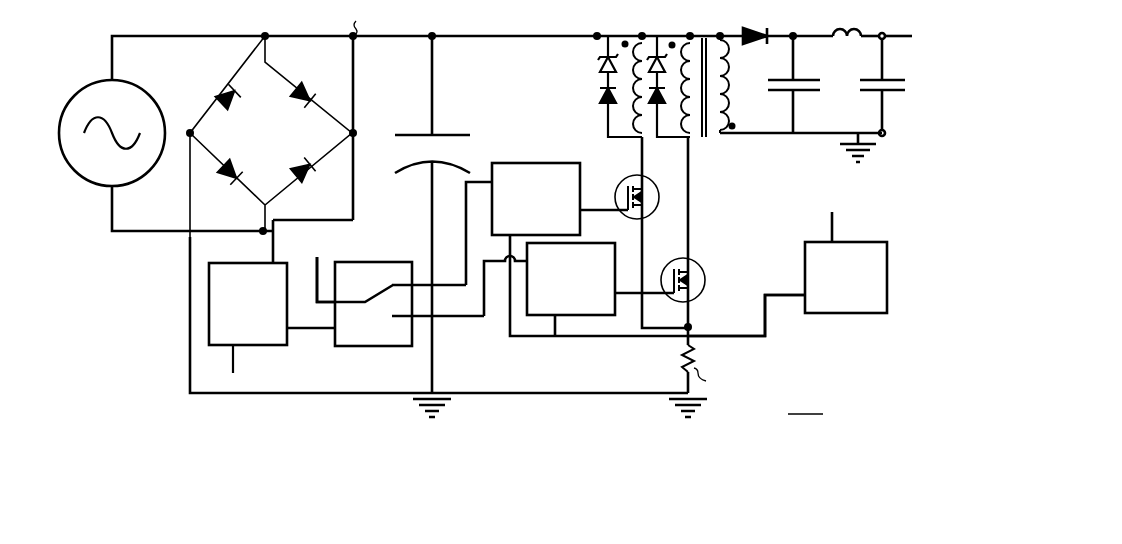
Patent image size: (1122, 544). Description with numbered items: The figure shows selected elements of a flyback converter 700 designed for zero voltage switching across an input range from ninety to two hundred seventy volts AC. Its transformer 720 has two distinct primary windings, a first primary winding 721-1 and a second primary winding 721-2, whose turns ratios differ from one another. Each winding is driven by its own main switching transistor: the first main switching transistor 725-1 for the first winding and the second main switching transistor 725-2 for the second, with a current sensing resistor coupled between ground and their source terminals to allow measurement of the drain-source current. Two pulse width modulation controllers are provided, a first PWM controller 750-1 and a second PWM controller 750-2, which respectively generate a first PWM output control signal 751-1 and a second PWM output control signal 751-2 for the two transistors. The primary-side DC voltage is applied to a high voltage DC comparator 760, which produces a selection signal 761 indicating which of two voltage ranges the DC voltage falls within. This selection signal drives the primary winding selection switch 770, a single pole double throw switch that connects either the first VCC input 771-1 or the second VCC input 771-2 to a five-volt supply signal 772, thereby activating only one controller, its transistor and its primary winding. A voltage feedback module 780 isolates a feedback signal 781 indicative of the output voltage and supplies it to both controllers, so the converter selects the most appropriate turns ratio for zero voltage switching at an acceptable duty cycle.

The flyback converter 700 is at (497, 271).
The transformer 720 is at (722, 145).
The first primary winding 721-1 is at (650, 26).
The second primary winding 721-2 is at (697, 26).
The first main switching transistor 725-1 is at (659, 199).
The second main switching transistor 725-2 is at (704, 265).
The PWM-1 controller 750-1 is at (576, 151).
The PWM-2 controller 750-2 is at (583, 316).
The first PWM output control signal 751-1 is at (587, 203).
The second PWM output control signal 751-2 is at (626, 288).
The high voltage DC comparator 760 is at (254, 346).
The selection signal 761 is at (313, 330).
The primary winding selection switch 770 is at (365, 347).
The VCC input 771-1 is at (466, 236).
The VCC input 771-2 is at (442, 318).
The 5V supply signal 772 is at (316, 299).
The voltage feedback module 780 is at (860, 314).
The feedback signal 781 is at (730, 338).